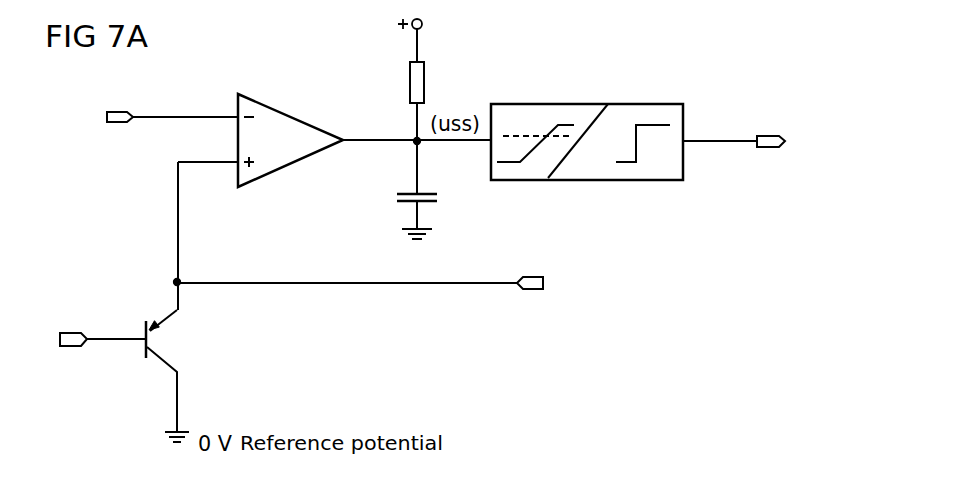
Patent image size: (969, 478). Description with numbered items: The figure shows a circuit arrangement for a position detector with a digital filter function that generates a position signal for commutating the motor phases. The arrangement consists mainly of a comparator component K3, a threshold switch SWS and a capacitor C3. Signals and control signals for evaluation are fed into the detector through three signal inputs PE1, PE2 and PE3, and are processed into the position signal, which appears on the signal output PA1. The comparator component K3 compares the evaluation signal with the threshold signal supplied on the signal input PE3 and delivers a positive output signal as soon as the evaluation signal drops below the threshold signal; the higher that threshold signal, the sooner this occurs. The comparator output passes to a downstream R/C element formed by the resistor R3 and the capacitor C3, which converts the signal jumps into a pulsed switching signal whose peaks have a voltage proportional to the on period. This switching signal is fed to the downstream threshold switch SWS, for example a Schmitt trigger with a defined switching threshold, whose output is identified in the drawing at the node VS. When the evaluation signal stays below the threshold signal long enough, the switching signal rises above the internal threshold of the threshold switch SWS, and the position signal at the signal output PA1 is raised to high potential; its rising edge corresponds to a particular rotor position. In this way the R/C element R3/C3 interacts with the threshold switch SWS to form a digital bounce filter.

The signal input PE1 is at (118, 125).
The signal input PE2 is at (68, 349).
The signal input PE3 is at (534, 292).
The signal output PA1 is at (762, 133).
The comparator component K3 is at (293, 170).
The resistor R3 is at (410, 85).
The capacitor C3 is at (430, 203).
The threshold switch SWS is at (588, 104).
The comparison signal output VS is at (720, 126).